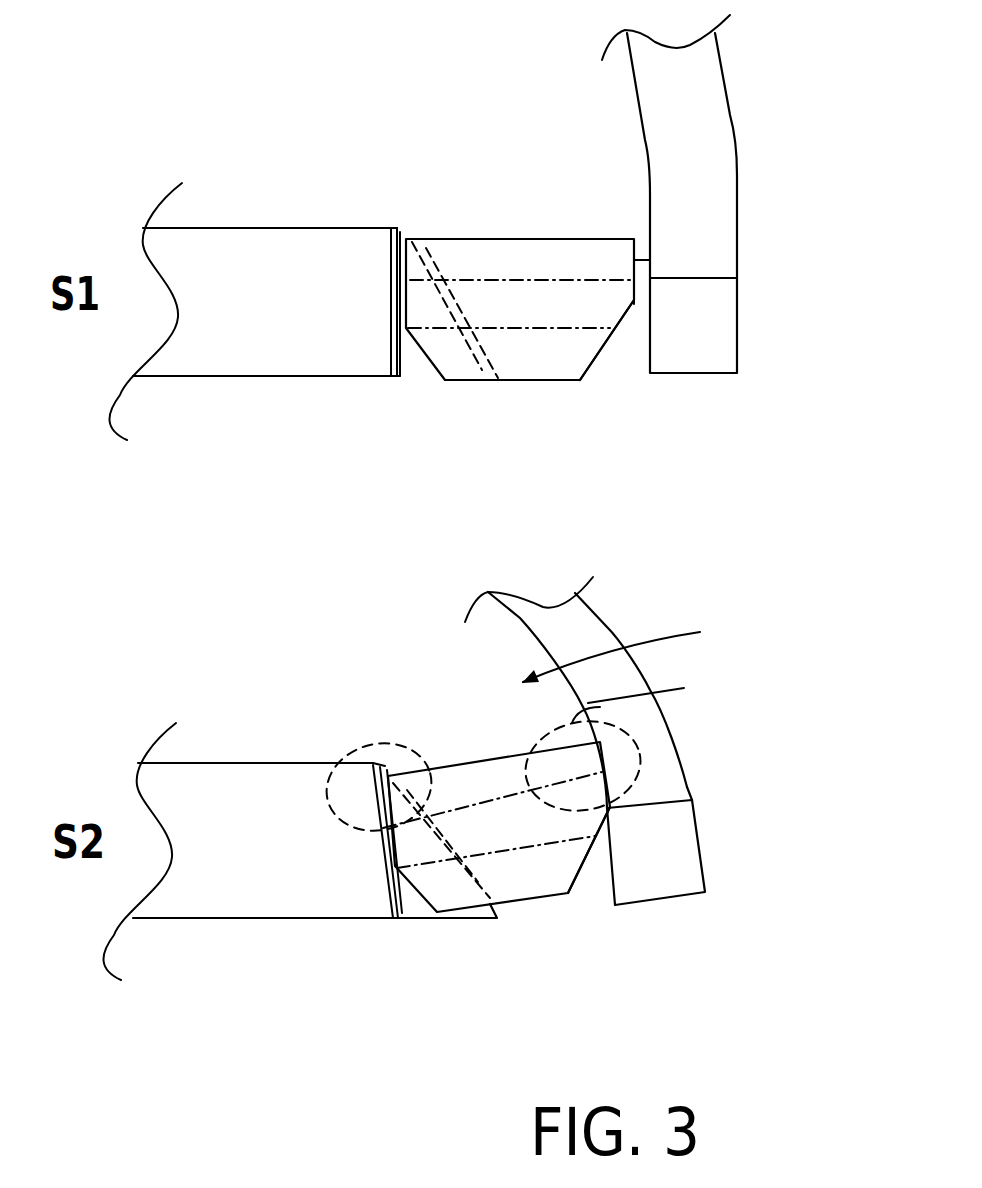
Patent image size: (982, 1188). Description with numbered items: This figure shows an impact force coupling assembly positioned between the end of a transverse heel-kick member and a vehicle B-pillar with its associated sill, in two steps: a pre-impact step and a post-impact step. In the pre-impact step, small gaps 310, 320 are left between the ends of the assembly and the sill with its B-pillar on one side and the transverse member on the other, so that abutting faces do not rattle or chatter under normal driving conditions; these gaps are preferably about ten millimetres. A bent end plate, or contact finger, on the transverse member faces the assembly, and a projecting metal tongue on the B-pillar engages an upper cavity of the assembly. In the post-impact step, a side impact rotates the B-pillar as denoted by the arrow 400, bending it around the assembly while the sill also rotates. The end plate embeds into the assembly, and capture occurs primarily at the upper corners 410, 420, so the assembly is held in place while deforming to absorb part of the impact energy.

The gap 310 is at (640, 298).
The gap 320 is at (403, 337).
The arrow 400 is at (653, 633).
The upper corner of the assembly 410 is at (667, 686).
The upper corner of the assembly 420 is at (360, 758).